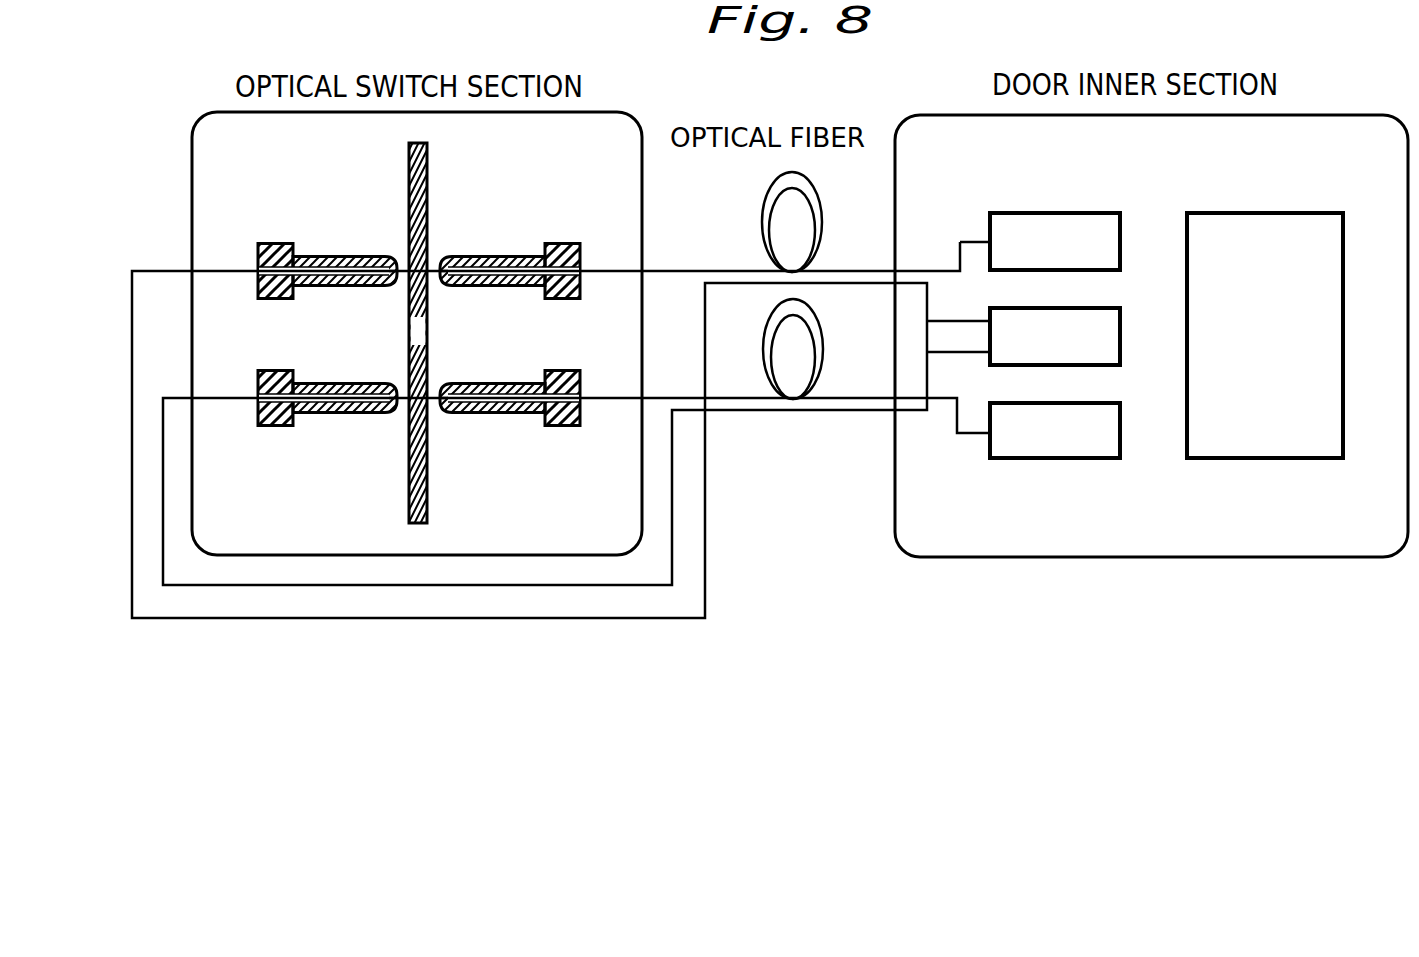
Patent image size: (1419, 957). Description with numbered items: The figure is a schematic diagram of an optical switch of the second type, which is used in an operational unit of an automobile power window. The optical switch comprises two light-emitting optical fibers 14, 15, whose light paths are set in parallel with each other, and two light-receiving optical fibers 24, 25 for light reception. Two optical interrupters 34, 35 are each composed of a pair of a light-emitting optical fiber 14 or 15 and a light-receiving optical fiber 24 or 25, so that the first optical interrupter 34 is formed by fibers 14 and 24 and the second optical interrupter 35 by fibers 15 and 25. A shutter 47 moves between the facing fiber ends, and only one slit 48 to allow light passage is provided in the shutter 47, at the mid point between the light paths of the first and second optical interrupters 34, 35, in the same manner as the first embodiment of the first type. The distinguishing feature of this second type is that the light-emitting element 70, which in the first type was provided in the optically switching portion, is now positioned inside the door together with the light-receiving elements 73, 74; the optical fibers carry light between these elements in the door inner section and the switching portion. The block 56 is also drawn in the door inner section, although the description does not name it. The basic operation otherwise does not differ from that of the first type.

The light-emitting optical fiber 14 is at (337, 256).
The light-emitting optical fiber 15 is at (335, 413).
The light-receiving optical fiber 24 is at (519, 256).
The light-receiving optical fiber 25 is at (512, 413).
The first optical interrupter 34 is at (320, 191).
The second optical interrupter 35 is at (317, 473).
The shutter 47 is at (408, 147).
The slit 48 is at (427, 331).
The door controller 56 is at (1288, 355).
The light-emitting element 70 is at (1075, 355).
The light-receiving element 73 is at (1075, 260).
The light-receiving element 74 is at (1075, 448).